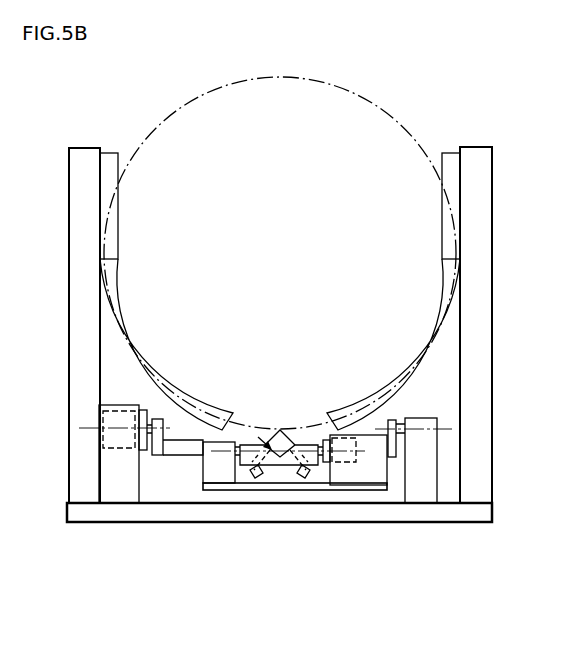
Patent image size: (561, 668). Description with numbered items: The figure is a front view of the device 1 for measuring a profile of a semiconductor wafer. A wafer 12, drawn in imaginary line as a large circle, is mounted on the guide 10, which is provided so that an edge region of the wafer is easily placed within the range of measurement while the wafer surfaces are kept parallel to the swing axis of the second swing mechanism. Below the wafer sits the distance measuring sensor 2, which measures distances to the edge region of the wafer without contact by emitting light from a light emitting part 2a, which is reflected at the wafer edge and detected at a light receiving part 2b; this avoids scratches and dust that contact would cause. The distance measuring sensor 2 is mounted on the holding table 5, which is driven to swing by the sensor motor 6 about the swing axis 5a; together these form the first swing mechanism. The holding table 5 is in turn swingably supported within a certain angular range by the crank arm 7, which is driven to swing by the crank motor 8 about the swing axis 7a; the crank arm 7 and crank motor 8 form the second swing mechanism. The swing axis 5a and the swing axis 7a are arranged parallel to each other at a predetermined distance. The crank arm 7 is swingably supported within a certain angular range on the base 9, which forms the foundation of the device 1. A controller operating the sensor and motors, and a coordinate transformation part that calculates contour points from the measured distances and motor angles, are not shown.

The device for measuring a profile 1 is at (472, 126).
The distance measuring sensor 2 is at (287, 598).
The light emitting part 2a is at (305, 478).
The light receiving part 2b is at (253, 478).
The holding table 5 is at (320, 465).
The swing axis of the holding table 5a is at (223, 455).
The sensor motor 6 is at (338, 463).
The crank arm 7 is at (355, 491).
The swing axis of the crank arm 7a is at (86, 430).
The crank motor 8 is at (147, 503).
The base 9 is at (97, 523).
The guide 10 is at (109, 152).
The wafer 12 is at (403, 128).